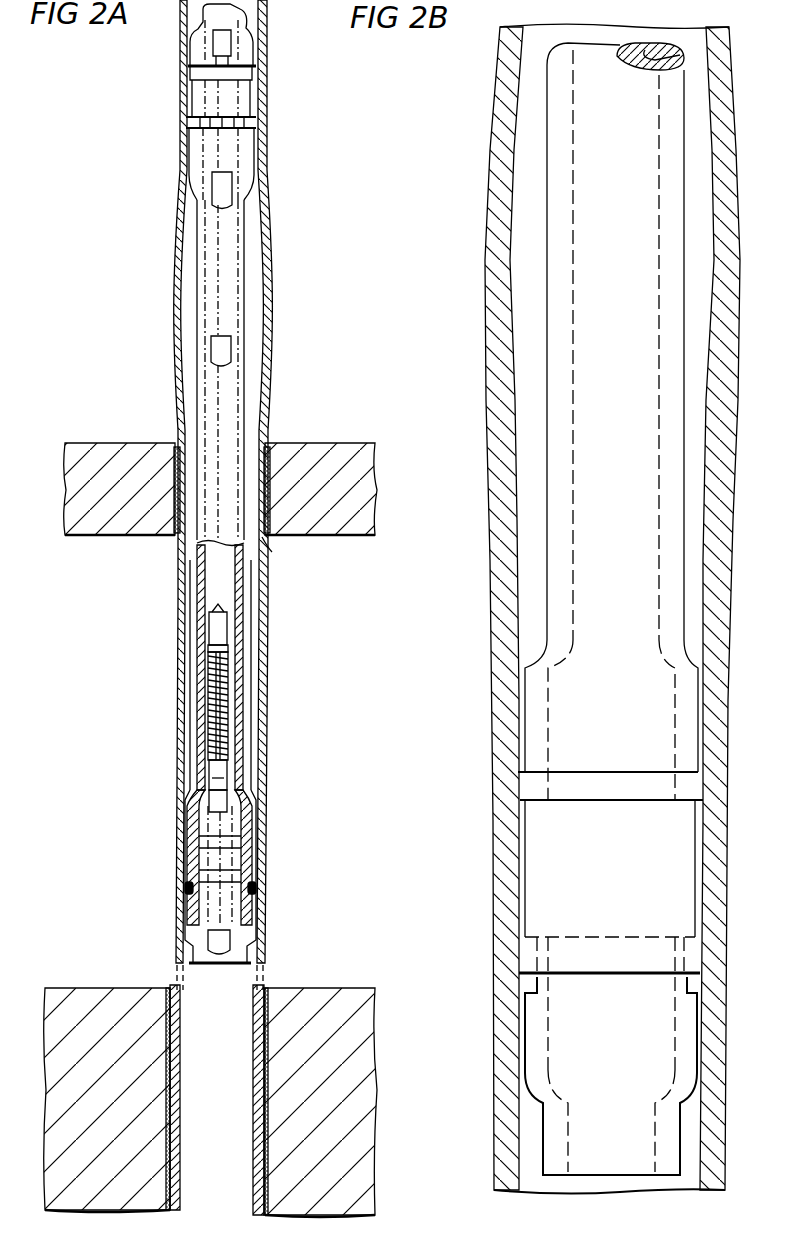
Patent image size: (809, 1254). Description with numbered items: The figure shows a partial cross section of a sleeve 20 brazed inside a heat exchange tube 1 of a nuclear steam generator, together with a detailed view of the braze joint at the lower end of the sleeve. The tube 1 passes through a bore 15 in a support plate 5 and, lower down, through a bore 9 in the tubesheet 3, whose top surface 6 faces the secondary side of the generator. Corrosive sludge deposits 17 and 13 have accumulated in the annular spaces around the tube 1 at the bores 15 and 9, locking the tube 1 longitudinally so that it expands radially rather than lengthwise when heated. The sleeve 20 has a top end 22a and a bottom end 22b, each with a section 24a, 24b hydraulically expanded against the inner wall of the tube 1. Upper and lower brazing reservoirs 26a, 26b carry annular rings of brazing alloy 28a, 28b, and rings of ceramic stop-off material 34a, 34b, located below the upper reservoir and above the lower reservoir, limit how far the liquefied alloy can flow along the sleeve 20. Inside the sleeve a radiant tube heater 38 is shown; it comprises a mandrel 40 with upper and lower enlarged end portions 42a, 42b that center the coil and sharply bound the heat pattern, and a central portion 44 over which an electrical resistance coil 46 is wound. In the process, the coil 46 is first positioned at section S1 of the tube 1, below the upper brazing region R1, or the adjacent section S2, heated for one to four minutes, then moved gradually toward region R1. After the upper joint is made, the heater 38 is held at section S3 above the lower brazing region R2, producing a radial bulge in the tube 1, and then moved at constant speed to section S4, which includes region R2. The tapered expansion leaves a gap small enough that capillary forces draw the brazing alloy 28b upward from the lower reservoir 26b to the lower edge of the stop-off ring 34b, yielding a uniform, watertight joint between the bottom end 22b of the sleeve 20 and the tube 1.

In FIG. 2A, the heat exchange tube 1 is at (172, 174).
In FIG. 2B, the heat exchange tube 1 is at (494, 94).
In FIG. 2A, the tubesheet 3 is at (330, 1000).
In FIG. 2A, the support plate 5 is at (352, 506).
In FIG. 2A, the top surface 6 is at (124, 988).
In FIG. 2A, the bore 9 is at (258, 1112).
In FIG. 2A, the sludge deposit 13 is at (270, 998).
In FIG. 2A, the bore 15 is at (268, 540).
In FIG. 2A, the sludge deposit 17 is at (266, 462).
In FIG. 2A, the sleeve 20 is at (245, 345).
In FIG. 2B, the sleeve 20 is at (626, 354).
In FIG. 2A, the top end 22a is at (246, 34).
In FIG. 2A, the bottom end 22b is at (220, 944).
In FIG. 2B, the bottom end 22b is at (668, 1120).
In FIG. 2A, the expanded section 24a is at (251, 156).
In FIG. 2A, the expanded section 24b is at (248, 806).
In FIG. 2B, the expanded section 24b is at (686, 696).
In FIG. 2A, the upper brazing reservoir 26a is at (252, 76).
In FIG. 2A, the lower brazing reservoir 26b is at (255, 888).
In FIG. 2B, the lower brazing reservoir 26b is at (692, 986).
In FIG. 2A, the brazing alloy ring 28a is at (250, 102).
In FIG. 2A, the brazing alloy ring 28b is at (250, 876).
In FIG. 2B, the brazing alloy ring 28b is at (688, 906).
In FIG. 2A, the ring of ceramic stop-off material 34a is at (250, 126).
In FIG. 2A, the ring of ceramic stop-off material 34b is at (243, 840).
In FIG. 2B, the ring of ceramic stop-off material 34b is at (686, 786).
In FIG. 2A, the radiant tube heater 38 is at (224, 243).
In FIG. 2A, the mandrel 40 is at (226, 650).
In FIG. 2A, the upper enlarged end portion 42a is at (222, 632).
In FIG. 2A, the lower enlarged end portion 42b is at (222, 778).
In FIG. 2A, the central portion 44 is at (219, 722).
In FIG. 2A, the electrical resistance coil 46 is at (224, 692).
In FIG. 2A, the tube section S1 is at (178, 360).
In FIG. 2A, the tube section S2 is at (178, 140).
In FIG. 2A, the tube section S3 is at (176, 765).
In FIG. 2B, the tube section S3 is at (490, 590).
In FIG. 2A, the tube section S4 is at (176, 908).
In FIG. 2B, the tube section S4 is at (492, 1049).
In FIG. 2A, the upper brazing region R1 is at (178, 115).
In FIG. 2A, the lower brazing region R2 is at (176, 880).
In FIG. 2B, the lower brazing region R2 is at (468, 800).